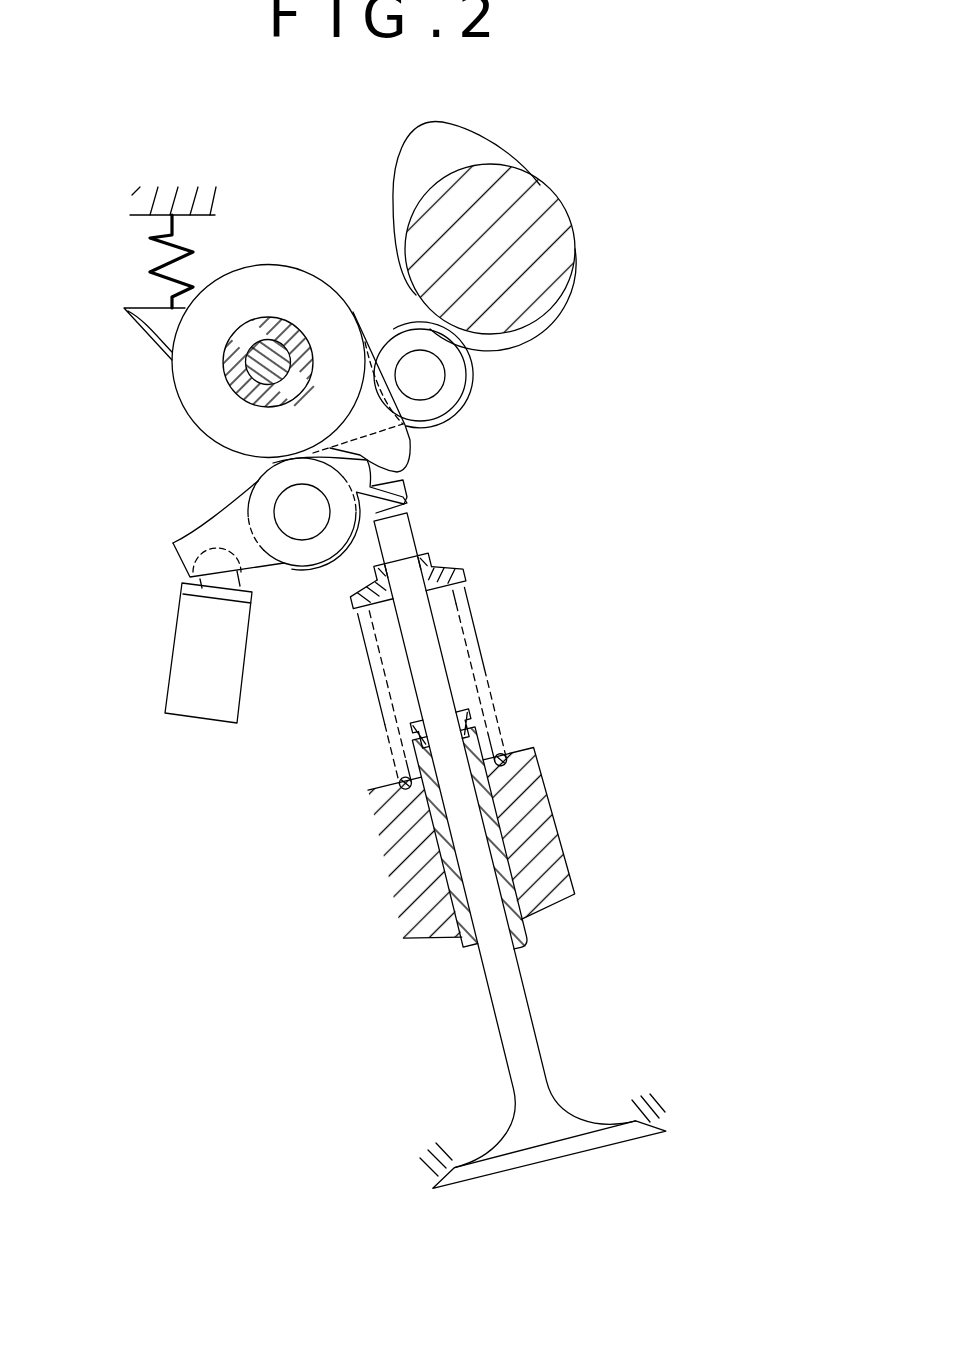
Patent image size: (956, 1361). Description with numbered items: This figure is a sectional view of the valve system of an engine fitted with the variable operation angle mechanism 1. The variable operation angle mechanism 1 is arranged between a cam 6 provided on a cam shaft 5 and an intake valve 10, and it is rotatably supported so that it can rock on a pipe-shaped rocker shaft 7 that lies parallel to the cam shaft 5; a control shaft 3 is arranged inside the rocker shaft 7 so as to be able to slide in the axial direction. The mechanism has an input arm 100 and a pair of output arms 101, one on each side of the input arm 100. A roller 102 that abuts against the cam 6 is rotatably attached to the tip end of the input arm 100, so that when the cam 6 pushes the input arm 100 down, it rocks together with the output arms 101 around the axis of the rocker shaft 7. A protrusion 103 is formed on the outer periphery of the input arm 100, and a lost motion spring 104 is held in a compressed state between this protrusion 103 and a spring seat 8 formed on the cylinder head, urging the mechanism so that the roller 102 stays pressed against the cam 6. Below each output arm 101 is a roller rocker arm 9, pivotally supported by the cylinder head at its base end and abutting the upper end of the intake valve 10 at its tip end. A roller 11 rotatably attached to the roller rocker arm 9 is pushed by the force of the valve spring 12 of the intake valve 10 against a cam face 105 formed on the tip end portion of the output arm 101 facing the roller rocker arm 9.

The variable operation angle mechanism 1 is at (172, 387).
The control shaft 3 is at (253, 348).
The cam shaft 5 is at (567, 247).
The cam 6 is at (463, 133).
The rocker shaft 7 is at (259, 405).
The spring seat 8 is at (195, 216).
The roller rocker arm 9 is at (225, 520).
The intake valve 10 is at (517, 1000).
The roller 11 is at (306, 572).
The valve spring 12 is at (483, 635).
The input arm 100 is at (458, 368).
The output arm 101 is at (412, 447).
The roller 102 is at (470, 404).
The protrusion 103 is at (150, 330).
The lost motion spring 104 is at (150, 262).
The cam face 105 is at (410, 486).